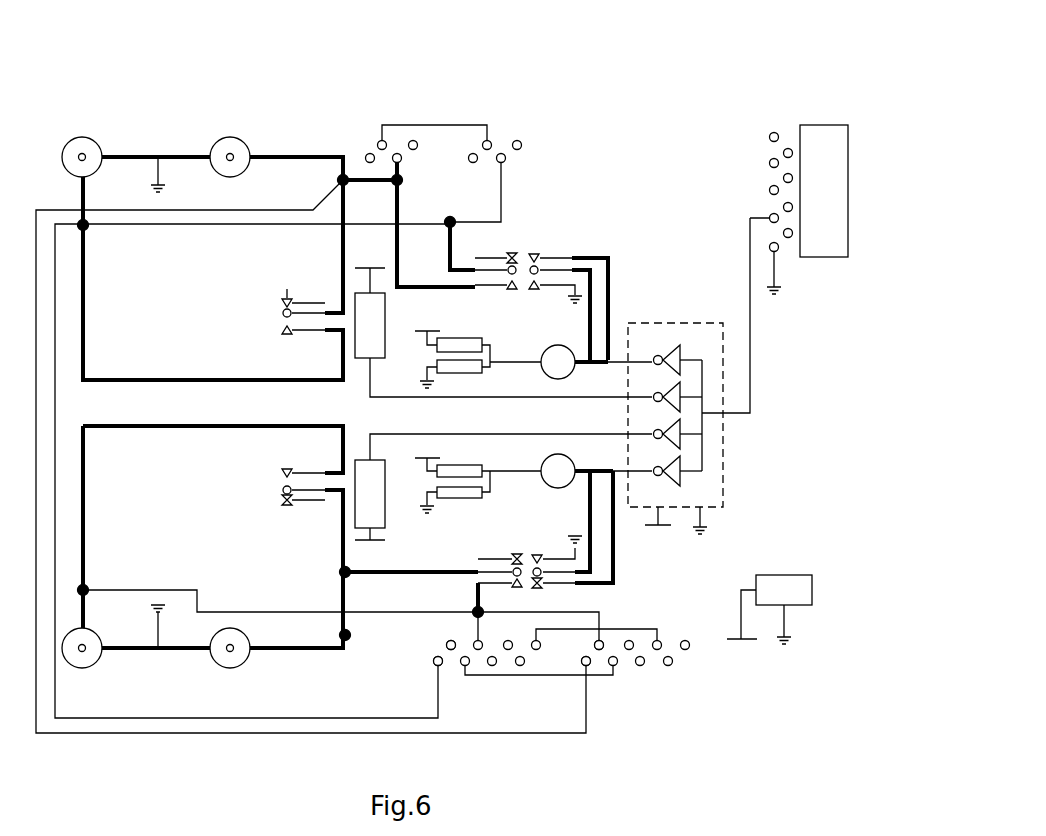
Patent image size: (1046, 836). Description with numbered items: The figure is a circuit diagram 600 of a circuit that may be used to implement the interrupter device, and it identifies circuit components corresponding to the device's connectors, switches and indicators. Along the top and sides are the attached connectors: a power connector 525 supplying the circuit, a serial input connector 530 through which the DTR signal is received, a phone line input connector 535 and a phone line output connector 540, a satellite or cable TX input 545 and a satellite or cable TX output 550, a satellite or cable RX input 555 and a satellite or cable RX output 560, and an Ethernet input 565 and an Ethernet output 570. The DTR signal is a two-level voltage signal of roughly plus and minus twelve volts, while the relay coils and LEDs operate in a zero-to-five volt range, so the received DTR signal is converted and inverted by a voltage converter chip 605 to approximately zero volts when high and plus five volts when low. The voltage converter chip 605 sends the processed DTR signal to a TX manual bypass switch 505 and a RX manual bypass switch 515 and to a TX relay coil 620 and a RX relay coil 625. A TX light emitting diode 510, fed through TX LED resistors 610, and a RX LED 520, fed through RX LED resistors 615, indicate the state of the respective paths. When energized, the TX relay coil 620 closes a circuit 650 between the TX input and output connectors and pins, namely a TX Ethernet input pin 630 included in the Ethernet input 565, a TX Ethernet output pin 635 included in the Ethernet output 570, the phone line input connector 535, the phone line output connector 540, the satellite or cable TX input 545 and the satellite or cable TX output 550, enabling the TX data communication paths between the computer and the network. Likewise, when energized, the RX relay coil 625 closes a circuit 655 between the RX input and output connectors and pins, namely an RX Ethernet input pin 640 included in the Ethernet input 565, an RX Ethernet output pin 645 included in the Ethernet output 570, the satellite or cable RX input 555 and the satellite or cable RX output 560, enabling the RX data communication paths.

The circuit diagram 600 is at (795, 27).
The TX manual bypass switch 505 is at (530, 253).
The TX light emitting diode 510 is at (570, 372).
The RX manual bypass switch 515 is at (540, 590).
The RX LED 520 is at (543, 485).
The power connector 525 is at (812, 590).
The serial input connector 530 is at (835, 130).
The phone line input connector 535 is at (393, 105).
The phone line output connector 540 is at (497, 105).
The satellite or cable TX input 545 is at (243, 142).
The satellite or cable TX output 550 is at (93, 148).
The satellite or cable RX input 555 is at (243, 657).
The satellite or cable RX output 560 is at (97, 658).
The Ethernet input 565 is at (630, 677).
The Ethernet output 570 is at (540, 673).
The voltage converter chip 605 is at (715, 457).
The TX LED resistors 610 is at (484, 343).
The RX LED resistors 615 is at (484, 468).
The TX relay coil 620 is at (385, 323).
The RX relay coil 625 is at (385, 490).
The TX Ethernet input pin 630 is at (589, 664).
The TX Ethernet output pin 635 is at (441, 665).
The RX Ethernet input pin 640 is at (602, 642).
The RX Ethernet output pin 645 is at (453, 643).
The TX circuit 650 is at (198, 382).
The RX circuit 655 is at (330, 650).